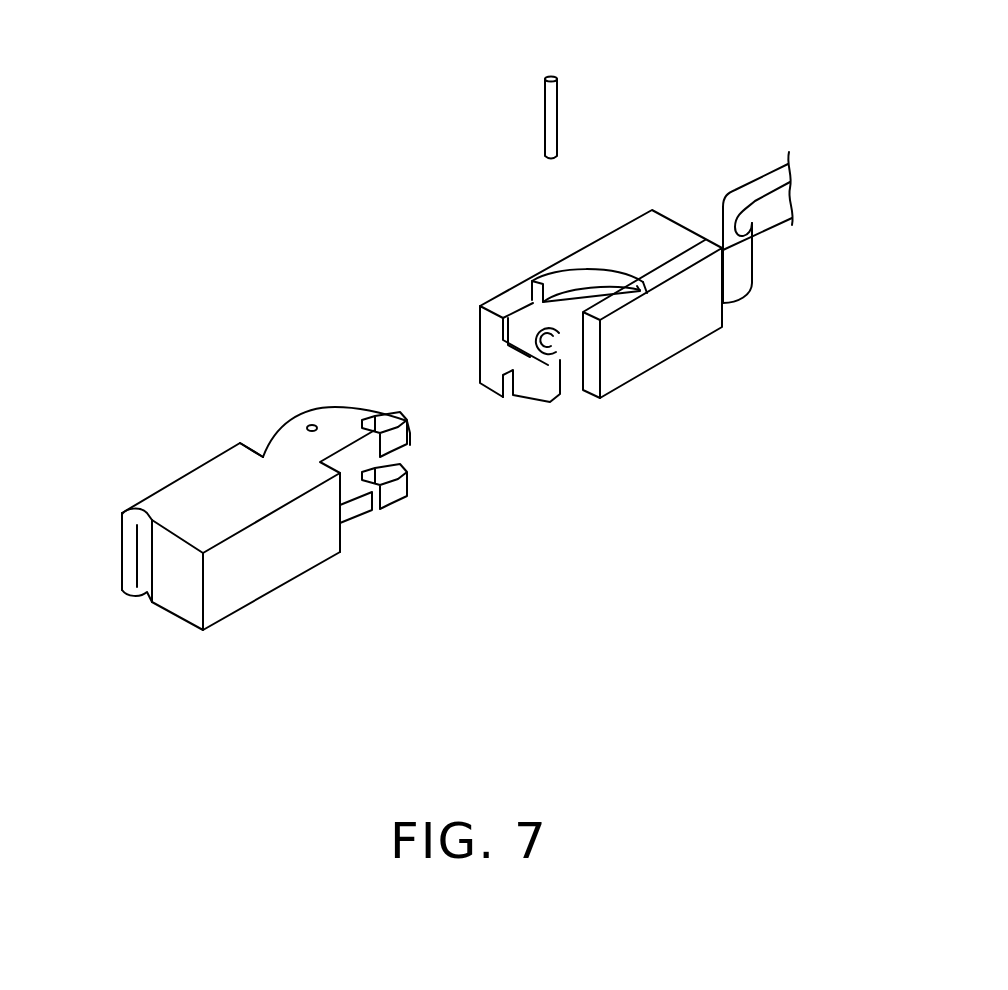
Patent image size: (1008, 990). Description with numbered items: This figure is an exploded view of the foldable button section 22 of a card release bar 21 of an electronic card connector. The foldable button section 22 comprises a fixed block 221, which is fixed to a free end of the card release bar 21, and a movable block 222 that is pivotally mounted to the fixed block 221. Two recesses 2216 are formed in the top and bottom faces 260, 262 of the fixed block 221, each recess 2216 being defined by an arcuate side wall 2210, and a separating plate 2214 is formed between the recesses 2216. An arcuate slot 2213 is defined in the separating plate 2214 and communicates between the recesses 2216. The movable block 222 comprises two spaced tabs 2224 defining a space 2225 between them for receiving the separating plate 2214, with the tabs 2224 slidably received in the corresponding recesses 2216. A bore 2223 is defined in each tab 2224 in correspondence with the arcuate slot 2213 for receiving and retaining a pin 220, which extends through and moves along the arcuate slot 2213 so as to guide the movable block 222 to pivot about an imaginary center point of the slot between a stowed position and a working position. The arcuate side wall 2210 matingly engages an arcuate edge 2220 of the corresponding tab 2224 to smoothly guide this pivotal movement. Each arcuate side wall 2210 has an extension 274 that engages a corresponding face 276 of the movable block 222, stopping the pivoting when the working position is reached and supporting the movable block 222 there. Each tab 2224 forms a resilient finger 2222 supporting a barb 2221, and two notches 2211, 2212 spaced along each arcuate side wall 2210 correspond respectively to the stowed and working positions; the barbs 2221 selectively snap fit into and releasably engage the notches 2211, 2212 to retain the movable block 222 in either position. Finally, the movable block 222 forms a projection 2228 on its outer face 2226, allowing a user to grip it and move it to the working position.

The card release bar 21 is at (762, 220).
The foldable button section 22 is at (543, 31).
The pin 220 is at (553, 92).
The fixed block 221 is at (697, 320).
The movable block 222 is at (192, 492).
The top face 260 is at (647, 222).
The bottom face 262 is at (653, 370).
The extension 274 is at (497, 318).
The face 276 is at (248, 433).
The arcuate side wall 2210 is at (581, 283).
The notch 2211 is at (530, 281).
The notch 2212 is at (643, 286).
The arcuate slot 2213 is at (507, 310).
The separating plate 2214 is at (507, 360).
The recess 2216 is at (567, 333).
The arcuate edge 2220 is at (350, 408).
The barb 2221 is at (417, 441).
The resilient finger 2222 is at (382, 413).
The bore 2223 is at (312, 424).
The tab 2224 is at (400, 537).
The space 2225 is at (402, 457).
The outer face 2226 is at (190, 597).
The projection 2228 is at (127, 558).